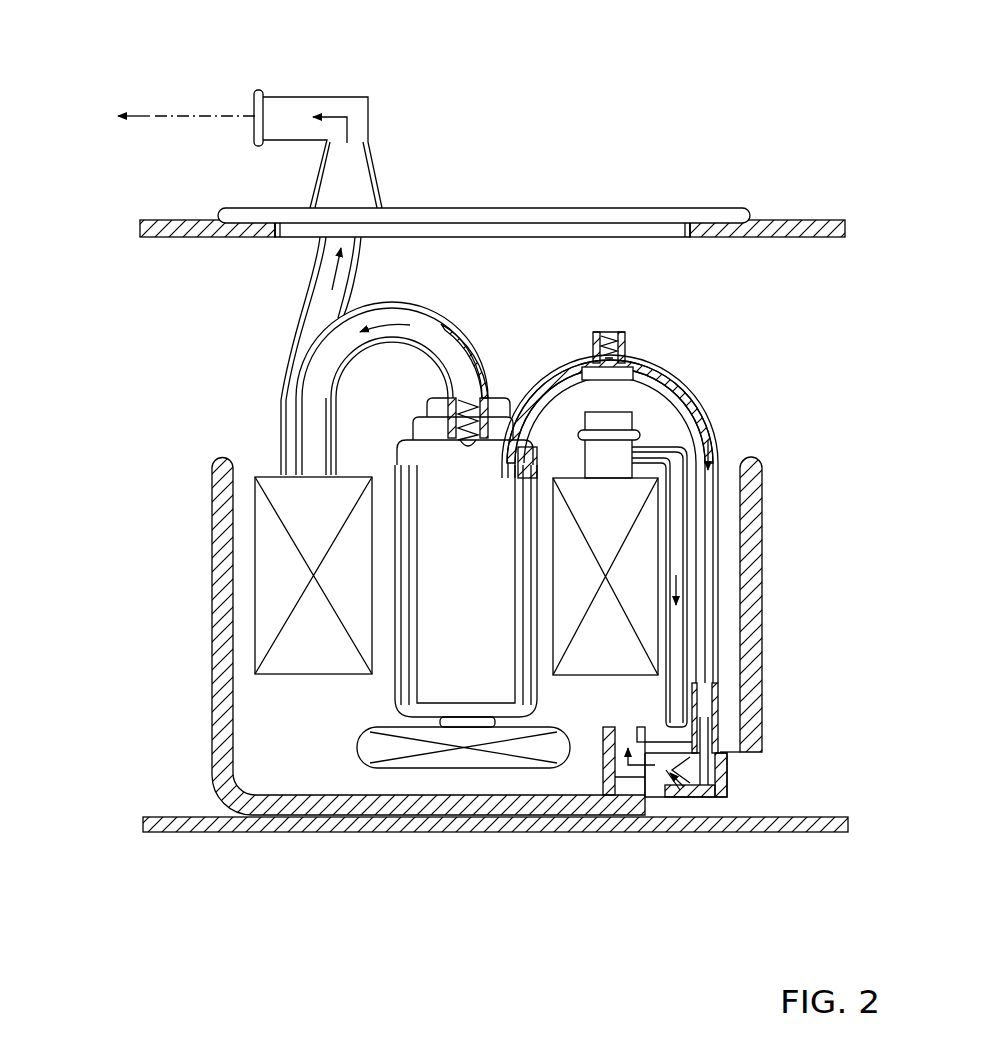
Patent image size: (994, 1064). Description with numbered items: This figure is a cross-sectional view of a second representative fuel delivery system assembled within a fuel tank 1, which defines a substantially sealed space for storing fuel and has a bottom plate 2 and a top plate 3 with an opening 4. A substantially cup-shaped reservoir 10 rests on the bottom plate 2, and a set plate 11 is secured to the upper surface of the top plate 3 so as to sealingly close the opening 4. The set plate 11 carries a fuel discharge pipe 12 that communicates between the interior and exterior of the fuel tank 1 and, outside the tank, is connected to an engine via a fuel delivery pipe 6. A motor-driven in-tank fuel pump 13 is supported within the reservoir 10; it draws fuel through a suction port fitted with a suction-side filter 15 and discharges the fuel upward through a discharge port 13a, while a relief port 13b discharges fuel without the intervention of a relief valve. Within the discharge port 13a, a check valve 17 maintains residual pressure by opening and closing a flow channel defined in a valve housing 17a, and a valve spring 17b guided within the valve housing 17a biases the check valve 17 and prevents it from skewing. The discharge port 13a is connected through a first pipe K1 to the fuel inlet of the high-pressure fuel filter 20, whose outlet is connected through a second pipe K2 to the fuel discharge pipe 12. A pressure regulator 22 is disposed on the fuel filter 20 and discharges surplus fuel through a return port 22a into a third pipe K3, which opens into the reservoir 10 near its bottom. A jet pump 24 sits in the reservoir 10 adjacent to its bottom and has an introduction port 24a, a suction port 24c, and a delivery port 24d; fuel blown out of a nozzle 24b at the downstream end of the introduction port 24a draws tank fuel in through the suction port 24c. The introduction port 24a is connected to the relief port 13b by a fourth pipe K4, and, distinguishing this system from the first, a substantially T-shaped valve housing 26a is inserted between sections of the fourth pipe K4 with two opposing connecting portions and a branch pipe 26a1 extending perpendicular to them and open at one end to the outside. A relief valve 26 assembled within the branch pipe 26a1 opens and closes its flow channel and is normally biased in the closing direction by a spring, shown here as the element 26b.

The fuel tank 1 is at (801, 220).
The bottom plate 2 is at (183, 823).
The top plate 3 is at (180, 232).
The opening 4 is at (692, 222).
The fuel delivery pipe 6 is at (189, 113).
The reservoir 10 is at (210, 740).
The set plate 11 is at (412, 208).
The fuel discharge pipe 12 is at (320, 97).
The fuel pump 13 is at (410, 622).
The discharge port 13a is at (492, 385).
The relief port 13b is at (527, 400).
The suction-side filter 15 is at (450, 762).
The check valve 17 is at (410, 437).
The valve housing 17a is at (448, 330).
The valve spring 17b is at (440, 408).
The fuel filter 20 is at (270, 542).
The pressure regulator 22 is at (640, 424).
The return port 22a is at (652, 455).
The jet pump 24 is at (730, 778).
The introduction port 24a is at (720, 737).
The nozzle 24b is at (700, 802).
The suction port 24c is at (658, 776).
The delivery port 24d is at (603, 740).
The relief valve 26 is at (630, 355).
The valve housing 26a is at (662, 377).
The branch pipe 26a1 is at (622, 345).
The valve element 26b is at (606, 330).
The first pipe K1 is at (312, 440).
The second pipe K2 is at (322, 300).
The third pipe K3 is at (677, 632).
The fourth pipe K4 is at (693, 400).